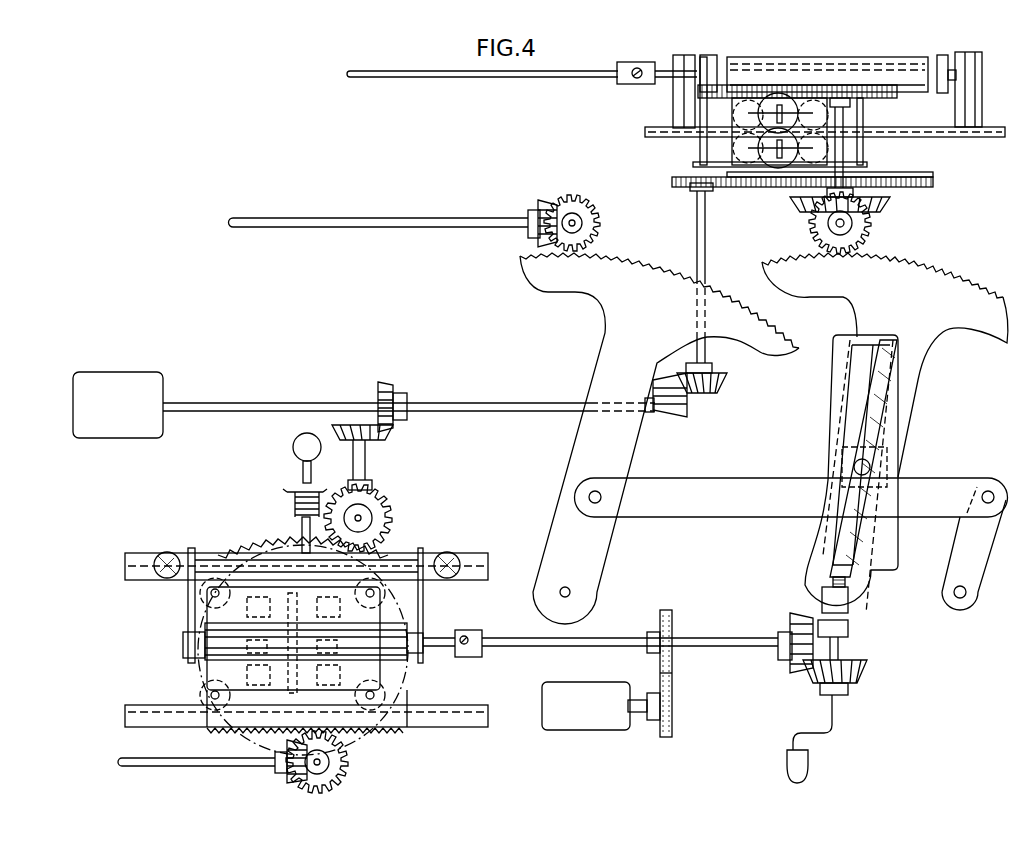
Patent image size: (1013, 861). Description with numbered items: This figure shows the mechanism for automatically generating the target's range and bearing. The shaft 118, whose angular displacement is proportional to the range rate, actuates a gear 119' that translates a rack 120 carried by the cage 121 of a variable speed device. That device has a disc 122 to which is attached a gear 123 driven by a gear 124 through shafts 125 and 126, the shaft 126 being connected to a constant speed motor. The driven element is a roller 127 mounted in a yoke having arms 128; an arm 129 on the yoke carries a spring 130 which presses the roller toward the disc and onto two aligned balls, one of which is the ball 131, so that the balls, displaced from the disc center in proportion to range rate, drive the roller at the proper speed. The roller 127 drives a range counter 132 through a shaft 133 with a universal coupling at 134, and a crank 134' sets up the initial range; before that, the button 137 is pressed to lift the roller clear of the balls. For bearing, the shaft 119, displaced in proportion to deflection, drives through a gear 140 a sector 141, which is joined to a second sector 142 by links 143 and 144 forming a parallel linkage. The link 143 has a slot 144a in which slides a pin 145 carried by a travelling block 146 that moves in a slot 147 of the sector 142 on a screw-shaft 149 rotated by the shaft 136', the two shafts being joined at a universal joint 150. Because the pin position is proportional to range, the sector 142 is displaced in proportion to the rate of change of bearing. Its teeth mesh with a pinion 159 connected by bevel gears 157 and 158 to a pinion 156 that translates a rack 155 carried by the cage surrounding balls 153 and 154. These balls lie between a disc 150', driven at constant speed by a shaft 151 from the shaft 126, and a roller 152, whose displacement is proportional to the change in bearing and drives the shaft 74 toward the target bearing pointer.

The shaft 74 is at (508, 82).
The rack 155 is at (660, 80).
The roller 152 is at (845, 68).
The pinion 156 is at (835, 88).
The ball 153 is at (800, 113).
The ball 154 is at (790, 152).
The disc 150' is at (825, 157).
The bevel gear 157 is at (790, 202).
The bevel gear 158 is at (873, 222).
The pinion 159 is at (858, 238).
The second sector 142 is at (935, 337).
The shaft 151 is at (707, 240).
The gear 140 is at (602, 222).
The shaft 119 is at (379, 201).
The sector 141 is at (615, 318).
The link 143 is at (728, 490).
The slot 144a is at (852, 348).
The slot 147 is at (892, 350).
The travelling nut or block 146 is at (838, 455).
The pin 145 is at (872, 464).
The link 144 is at (970, 537).
The screw-shaft 149 is at (832, 582).
The universal joint 150 is at (871, 622).
The shaft 136' is at (856, 654).
The crank 134' is at (777, 739).
The shaft 133 is at (624, 636).
The range counter 132 is at (580, 735).
The universal coupling 134 is at (502, 653).
The arms 128 is at (425, 618).
The disc 122 is at (395, 600).
The gear 123 is at (270, 552).
The roller 127 is at (225, 635).
The ball 131 is at (240, 665).
The cage 121 is at (330, 680).
The rack 120 is at (405, 733).
The gear 119' is at (348, 762).
The shaft 118 is at (165, 770).
The shaft 126 is at (233, 400).
The button 137 is at (293, 443).
The spring 130 is at (300, 490).
The arm 129 is at (305, 530).
The gear 124 is at (395, 518).
The shaft 125 is at (368, 457).